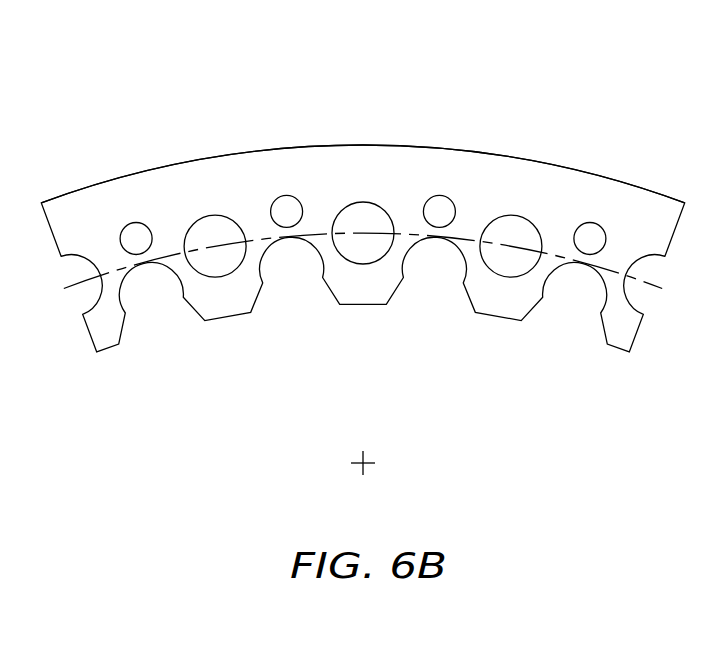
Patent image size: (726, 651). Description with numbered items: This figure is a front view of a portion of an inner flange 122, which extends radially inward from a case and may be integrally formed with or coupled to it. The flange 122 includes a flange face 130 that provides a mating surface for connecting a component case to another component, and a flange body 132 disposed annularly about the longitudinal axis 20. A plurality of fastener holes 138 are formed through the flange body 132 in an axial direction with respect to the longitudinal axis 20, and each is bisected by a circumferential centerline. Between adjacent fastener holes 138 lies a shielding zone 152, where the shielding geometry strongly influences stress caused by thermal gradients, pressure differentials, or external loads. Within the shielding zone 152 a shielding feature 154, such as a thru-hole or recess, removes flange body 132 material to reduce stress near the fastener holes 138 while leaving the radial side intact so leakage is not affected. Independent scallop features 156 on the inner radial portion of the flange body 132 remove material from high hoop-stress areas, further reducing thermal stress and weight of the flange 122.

The flange 122 is at (362, 193).
The flange face 130 is at (608, 203).
The flange body 132 is at (513, 180).
The shielding zone 152 is at (423, 225).
The fastener hole 138 is at (232, 260).
The shielding feature 154 is at (440, 210).
The scallop feature 156 is at (573, 312).
The longitudinal axis 20 is at (365, 467).